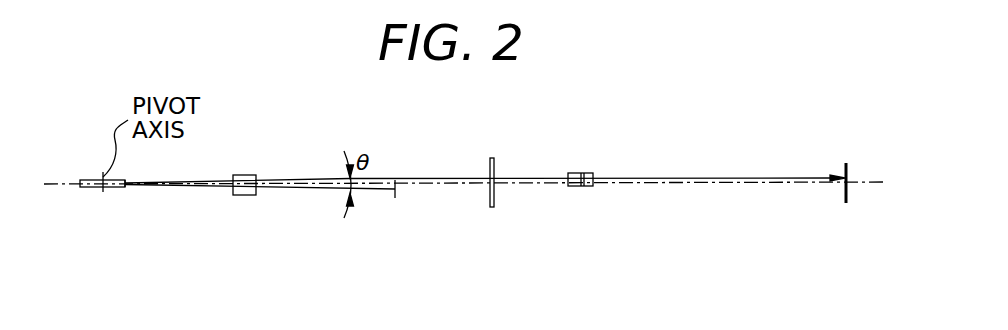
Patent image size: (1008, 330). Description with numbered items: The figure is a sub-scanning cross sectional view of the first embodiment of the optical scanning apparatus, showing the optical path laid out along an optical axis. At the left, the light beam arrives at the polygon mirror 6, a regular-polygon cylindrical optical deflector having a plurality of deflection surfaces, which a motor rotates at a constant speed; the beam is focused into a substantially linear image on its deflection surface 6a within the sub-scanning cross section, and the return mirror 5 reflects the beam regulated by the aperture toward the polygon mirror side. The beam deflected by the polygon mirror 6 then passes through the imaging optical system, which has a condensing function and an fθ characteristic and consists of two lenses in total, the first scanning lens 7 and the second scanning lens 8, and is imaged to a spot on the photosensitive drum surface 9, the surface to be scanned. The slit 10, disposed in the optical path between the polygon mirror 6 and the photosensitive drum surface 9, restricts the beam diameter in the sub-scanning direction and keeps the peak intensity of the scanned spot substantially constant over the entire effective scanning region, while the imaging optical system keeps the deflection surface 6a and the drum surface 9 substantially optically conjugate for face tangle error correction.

The return mirror 5 is at (396, 197).
The polygon mirror 6 is at (85, 189).
The deflection surface 6a is at (125, 187).
The first scanning lens 7 is at (245, 196).
The second scanning lens 8 is at (580, 187).
The photosensitive drum surface 9 is at (848, 195).
The slit member 10 is at (495, 200).